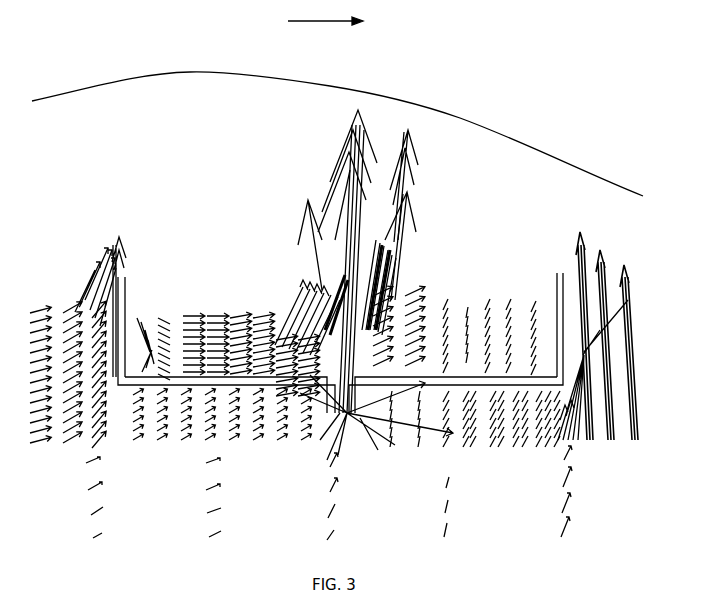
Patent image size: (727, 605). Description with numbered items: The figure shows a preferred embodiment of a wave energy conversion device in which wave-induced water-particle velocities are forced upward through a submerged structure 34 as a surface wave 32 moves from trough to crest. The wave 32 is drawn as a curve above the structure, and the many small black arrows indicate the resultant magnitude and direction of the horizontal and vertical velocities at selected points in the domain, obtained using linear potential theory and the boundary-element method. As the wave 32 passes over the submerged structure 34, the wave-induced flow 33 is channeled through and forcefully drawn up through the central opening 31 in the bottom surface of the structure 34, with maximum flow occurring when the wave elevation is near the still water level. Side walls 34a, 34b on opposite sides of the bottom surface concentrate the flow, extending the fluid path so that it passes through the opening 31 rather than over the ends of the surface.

The central opening 31 is at (368, 398).
The wave 32 is at (440, 108).
The wave-induced flow 33 is at (363, 225).
The submerged structure 34 is at (185, 392).
The side wall 34a is at (125, 316).
The side wall 34b is at (557, 310).